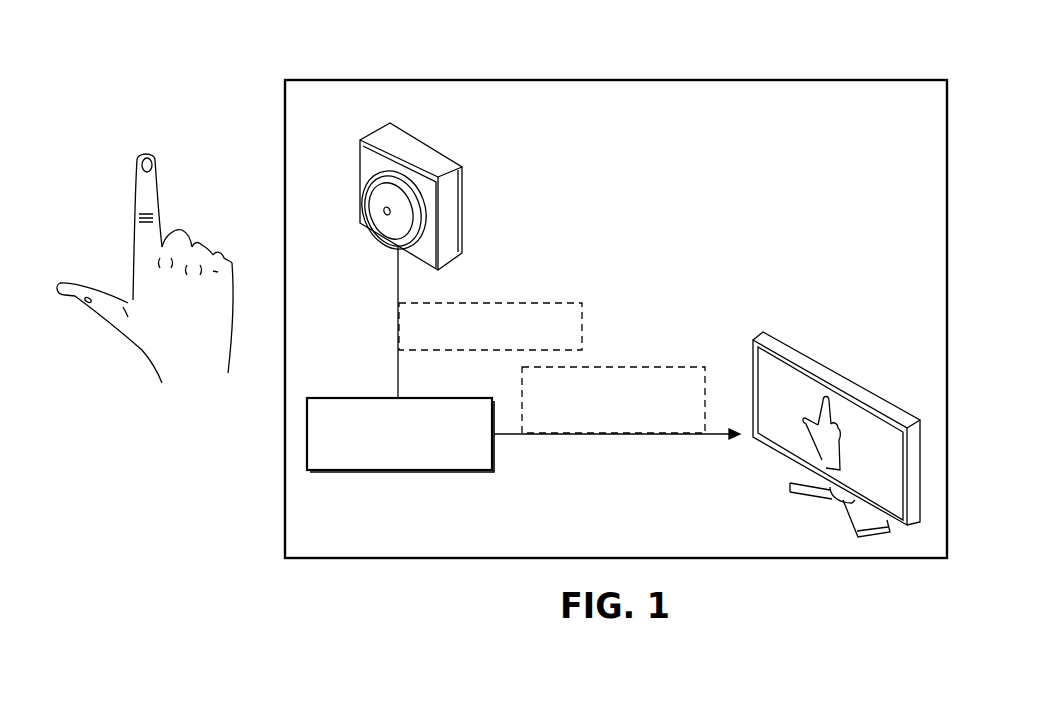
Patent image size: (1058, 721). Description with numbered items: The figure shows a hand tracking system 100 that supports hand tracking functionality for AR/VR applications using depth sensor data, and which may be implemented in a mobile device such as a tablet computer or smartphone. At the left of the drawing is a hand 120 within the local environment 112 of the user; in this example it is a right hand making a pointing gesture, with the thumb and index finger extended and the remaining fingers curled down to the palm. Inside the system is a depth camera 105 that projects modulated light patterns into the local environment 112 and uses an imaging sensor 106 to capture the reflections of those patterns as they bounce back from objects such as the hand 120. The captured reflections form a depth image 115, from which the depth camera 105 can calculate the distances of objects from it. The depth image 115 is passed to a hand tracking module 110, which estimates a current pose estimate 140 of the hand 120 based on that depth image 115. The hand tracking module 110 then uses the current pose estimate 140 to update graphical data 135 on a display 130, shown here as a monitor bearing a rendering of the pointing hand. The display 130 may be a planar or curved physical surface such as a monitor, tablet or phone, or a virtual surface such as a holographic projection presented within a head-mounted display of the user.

The hand tracking system 100 is at (789, 79).
The depth camera 105 is at (386, 187).
The imaging sensor 106 is at (382, 223).
The hand tracking module 110 is at (388, 470).
The local environment 112 is at (148, 107).
The depth image 115 is at (490, 300).
The hand 120 is at (133, 243).
The display 130 is at (858, 392).
The graphical data 135 is at (812, 407).
The current pose estimate 140 is at (640, 365).